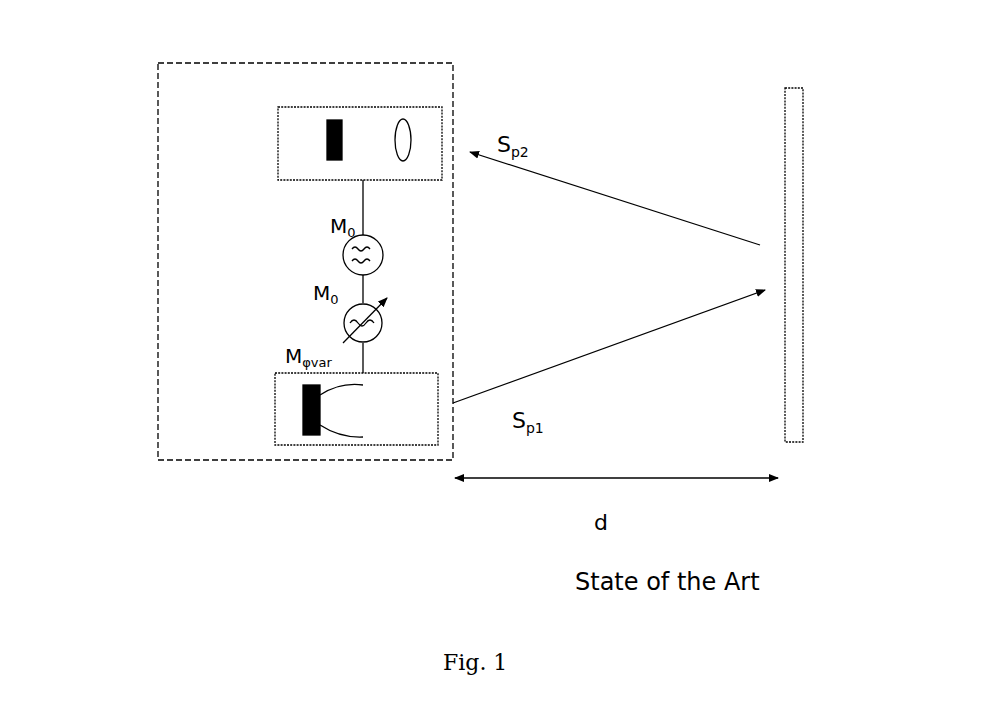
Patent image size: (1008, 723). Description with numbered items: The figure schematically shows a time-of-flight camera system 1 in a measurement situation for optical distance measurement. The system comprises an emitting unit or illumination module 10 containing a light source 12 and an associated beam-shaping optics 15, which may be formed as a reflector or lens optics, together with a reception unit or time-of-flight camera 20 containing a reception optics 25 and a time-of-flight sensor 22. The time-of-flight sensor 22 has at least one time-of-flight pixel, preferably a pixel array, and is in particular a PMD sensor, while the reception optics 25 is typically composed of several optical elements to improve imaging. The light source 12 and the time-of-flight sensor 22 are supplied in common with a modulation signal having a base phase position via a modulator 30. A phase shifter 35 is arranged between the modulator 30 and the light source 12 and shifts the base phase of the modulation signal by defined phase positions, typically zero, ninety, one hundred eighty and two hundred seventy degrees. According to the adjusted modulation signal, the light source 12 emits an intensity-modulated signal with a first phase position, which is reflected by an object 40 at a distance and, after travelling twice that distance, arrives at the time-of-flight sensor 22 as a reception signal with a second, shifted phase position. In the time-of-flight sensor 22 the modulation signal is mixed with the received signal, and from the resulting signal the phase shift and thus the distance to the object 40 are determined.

The time-of-flight camera system 1 is at (108, 70).
The illumination module 10 is at (387, 457).
The light source 12 is at (297, 433).
The beam-shaping optics 15 is at (338, 440).
The time-of-flight camera 20 is at (313, 90).
The time-of-flight sensor 22 is at (322, 137).
The reception optics 25 is at (402, 113).
The modulator 30 is at (343, 240).
The phase shifter 35 is at (333, 332).
The object 40 is at (803, 415).